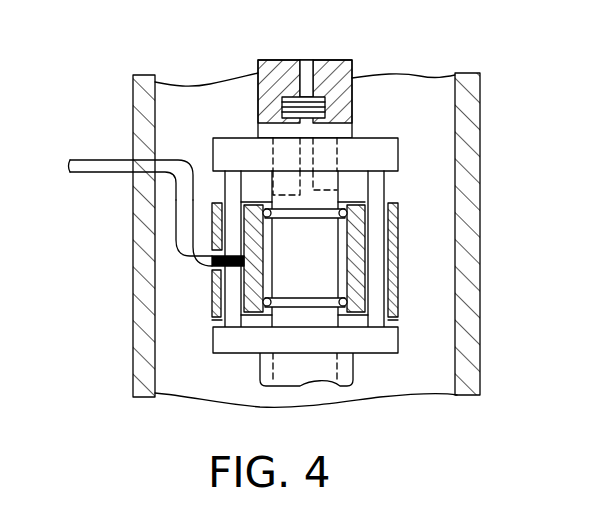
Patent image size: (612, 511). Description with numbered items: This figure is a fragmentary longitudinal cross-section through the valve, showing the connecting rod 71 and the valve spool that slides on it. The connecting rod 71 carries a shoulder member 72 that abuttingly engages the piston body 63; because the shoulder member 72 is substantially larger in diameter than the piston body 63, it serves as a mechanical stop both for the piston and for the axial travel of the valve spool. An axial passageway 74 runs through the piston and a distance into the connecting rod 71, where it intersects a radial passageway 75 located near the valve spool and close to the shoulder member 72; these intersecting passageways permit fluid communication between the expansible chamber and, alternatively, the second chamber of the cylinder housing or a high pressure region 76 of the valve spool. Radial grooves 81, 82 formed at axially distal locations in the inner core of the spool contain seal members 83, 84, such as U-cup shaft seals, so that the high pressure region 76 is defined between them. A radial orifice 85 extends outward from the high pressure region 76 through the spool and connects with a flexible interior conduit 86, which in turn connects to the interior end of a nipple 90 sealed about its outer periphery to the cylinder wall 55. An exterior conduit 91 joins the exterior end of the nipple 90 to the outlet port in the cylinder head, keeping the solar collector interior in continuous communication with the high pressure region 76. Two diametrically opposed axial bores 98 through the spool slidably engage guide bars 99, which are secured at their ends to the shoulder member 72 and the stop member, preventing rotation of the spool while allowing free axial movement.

The cylinder wall 55 is at (133, 272).
The piston body 63 is at (257, 68).
The connecting rod 71 is at (384, 183).
The shoulder member 72 is at (232, 138).
The axial passageway 74 is at (325, 60).
The radial passageway 75 is at (230, 187).
The high pressure region 76 is at (308, 275).
The radial groove 81 is at (347, 213).
The radial groove 82 is at (373, 282).
The seal member 83 is at (352, 242).
The seal member 84 is at (350, 312).
The radial orifice 85 is at (211, 288).
The flexible interior conduit 86 is at (160, 219).
The nipple 90 is at (146, 156).
The exterior conduit 91 is at (68, 168).
The axial bore 98 is at (220, 308).
The guide bar 99 is at (220, 322).